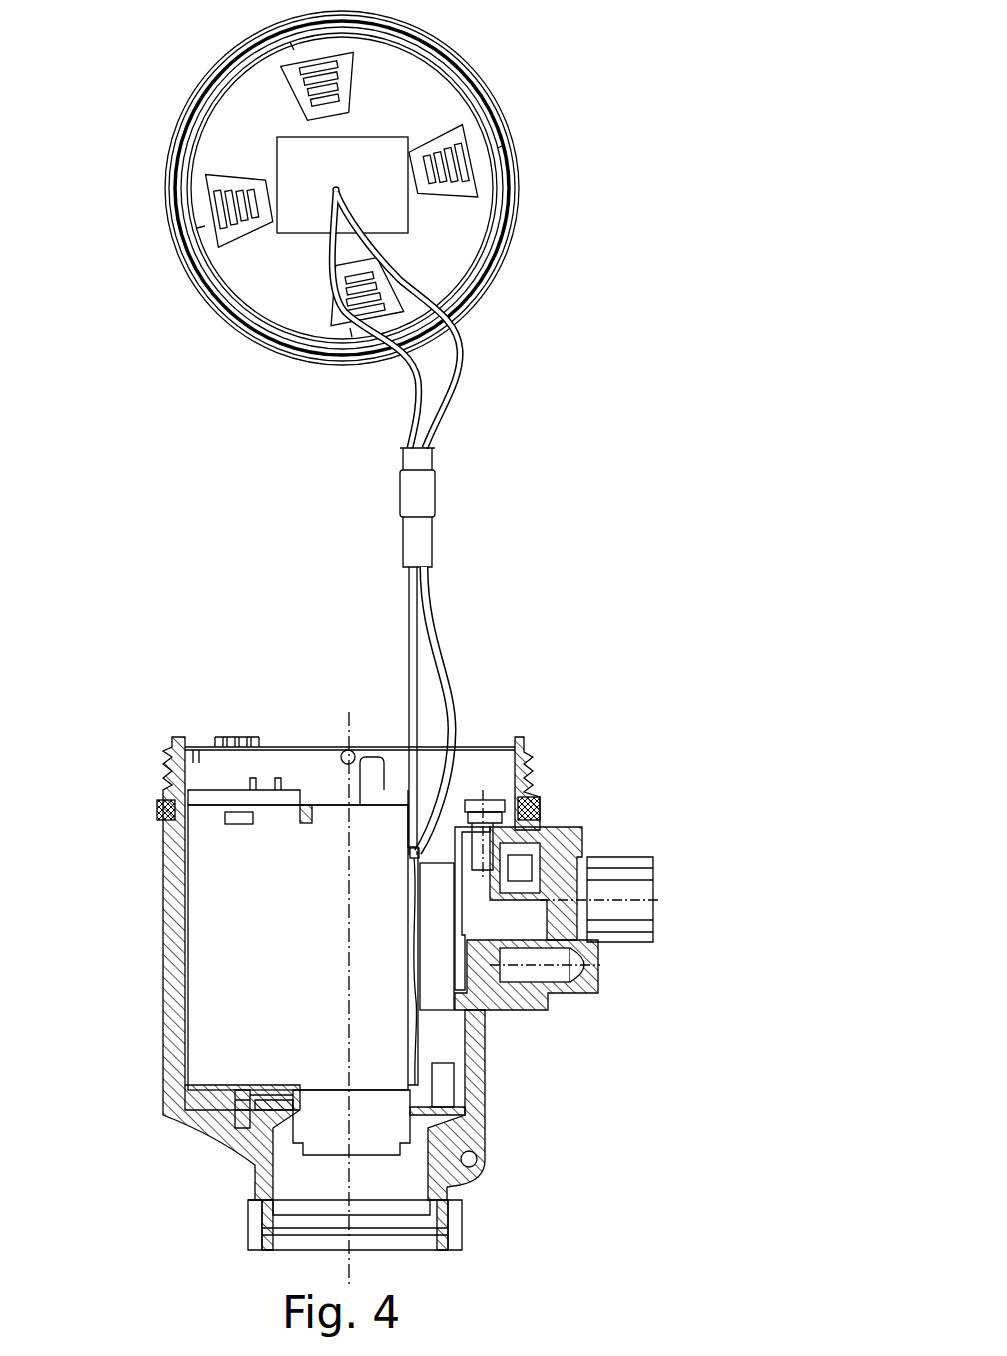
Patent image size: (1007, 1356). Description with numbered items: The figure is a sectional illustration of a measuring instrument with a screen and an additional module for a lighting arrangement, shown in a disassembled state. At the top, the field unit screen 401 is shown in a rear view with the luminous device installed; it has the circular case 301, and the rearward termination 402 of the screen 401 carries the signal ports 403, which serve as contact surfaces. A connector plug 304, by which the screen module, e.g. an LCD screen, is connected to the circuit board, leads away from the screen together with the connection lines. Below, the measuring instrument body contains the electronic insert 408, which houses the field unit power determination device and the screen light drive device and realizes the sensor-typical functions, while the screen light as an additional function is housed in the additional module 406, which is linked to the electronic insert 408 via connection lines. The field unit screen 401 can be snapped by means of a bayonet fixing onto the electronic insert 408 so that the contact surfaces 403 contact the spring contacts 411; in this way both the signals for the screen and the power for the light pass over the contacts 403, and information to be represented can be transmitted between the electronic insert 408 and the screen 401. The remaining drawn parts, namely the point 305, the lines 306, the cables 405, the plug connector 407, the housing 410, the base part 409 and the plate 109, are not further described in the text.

The field unit screen 401 is at (519, 45).
The case 301 is at (205, 314).
The rearward termination 402 is at (452, 240).
The signal ports 403 is at (300, 96).
The connection point 305 is at (367, 167).
The connection lines 306 is at (462, 355).
The connector plug 304 is at (424, 497).
The cables 405 is at (408, 633).
The plug connector 407 is at (447, 797).
The spring contacts 411 is at (222, 712).
The housing 410 is at (165, 760).
The electronic insert 408 is at (218, 948).
The additional module 406 is at (438, 1008).
The base part 409 is at (487, 1148).
The bottom plate 109 is at (182, 1115).